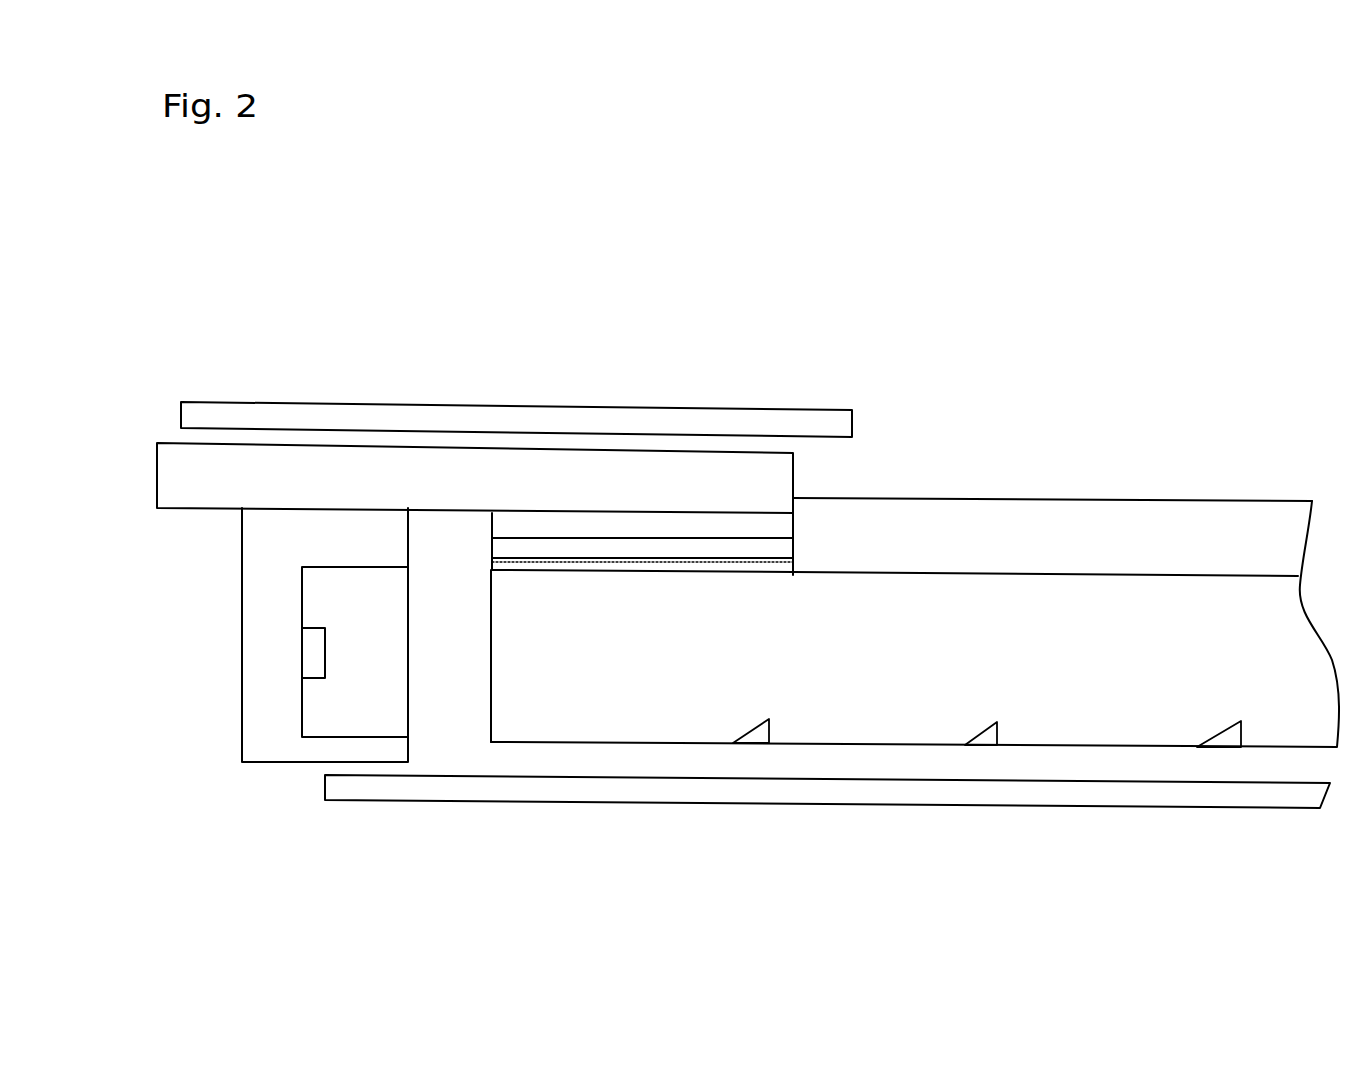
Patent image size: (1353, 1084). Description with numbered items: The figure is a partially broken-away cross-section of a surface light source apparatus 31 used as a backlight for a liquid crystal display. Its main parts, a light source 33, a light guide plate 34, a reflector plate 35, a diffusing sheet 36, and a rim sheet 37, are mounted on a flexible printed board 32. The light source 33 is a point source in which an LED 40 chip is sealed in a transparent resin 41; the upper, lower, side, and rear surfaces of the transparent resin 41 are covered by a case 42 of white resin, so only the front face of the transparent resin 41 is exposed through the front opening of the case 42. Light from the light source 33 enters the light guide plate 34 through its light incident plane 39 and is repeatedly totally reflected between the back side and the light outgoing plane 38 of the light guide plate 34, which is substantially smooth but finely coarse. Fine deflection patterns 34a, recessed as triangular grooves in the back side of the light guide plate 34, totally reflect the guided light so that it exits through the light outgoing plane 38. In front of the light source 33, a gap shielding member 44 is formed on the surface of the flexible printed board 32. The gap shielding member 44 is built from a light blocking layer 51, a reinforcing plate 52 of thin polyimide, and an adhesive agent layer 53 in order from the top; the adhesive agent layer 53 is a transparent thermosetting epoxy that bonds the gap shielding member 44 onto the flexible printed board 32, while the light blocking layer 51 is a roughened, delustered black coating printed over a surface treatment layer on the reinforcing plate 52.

The surface light source apparatus 31 is at (1198, 301).
The flexible printed board 32 is at (318, 475).
The light source 33 is at (240, 722).
The light guide plate 34 is at (875, 655).
The deflection pattern 34a is at (983, 737).
The reflector plate 35 is at (755, 792).
The diffusing sheet 36 is at (1227, 543).
The rim sheet 37 is at (587, 415).
The light outgoing plane 38 is at (1058, 575).
The light incident plane 39 is at (492, 693).
The LED 40 is at (317, 651).
The transparent resin 41 is at (337, 718).
The case 42 is at (265, 580).
The gap shielding member 44 is at (737, 191).
The light blocking layer 51 is at (745, 560).
The reinforcing plate 52 is at (713, 548).
The adhesive agent layer 53 is at (693, 528).